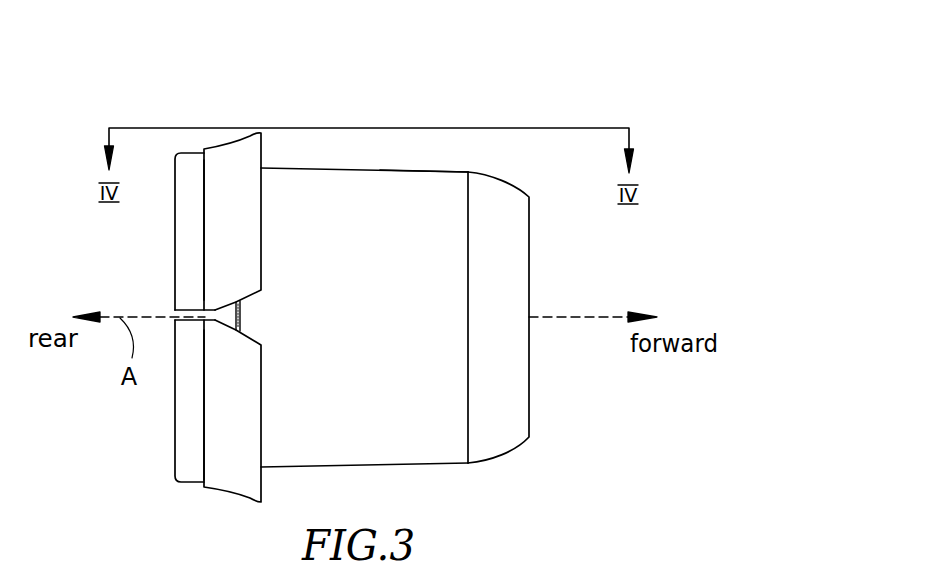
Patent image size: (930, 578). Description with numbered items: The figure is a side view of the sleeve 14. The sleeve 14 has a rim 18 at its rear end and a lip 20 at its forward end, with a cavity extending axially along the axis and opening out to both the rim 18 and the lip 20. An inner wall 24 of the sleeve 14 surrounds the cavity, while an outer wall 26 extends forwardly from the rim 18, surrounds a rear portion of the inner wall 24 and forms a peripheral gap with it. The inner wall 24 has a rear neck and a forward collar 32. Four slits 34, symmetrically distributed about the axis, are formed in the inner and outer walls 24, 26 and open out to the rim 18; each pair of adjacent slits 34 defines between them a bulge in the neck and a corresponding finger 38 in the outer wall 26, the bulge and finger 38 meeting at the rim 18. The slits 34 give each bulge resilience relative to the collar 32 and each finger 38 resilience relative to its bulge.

The sleeve 14 is at (557, 68).
The rim 18 is at (167, 134).
The lip 20 is at (529, 197).
The inner wall 24 is at (341, 191).
The outer wall 26 is at (230, 156).
The forward collar 32 is at (415, 203).
The slits 34 is at (151, 296).
The finger 38 is at (222, 228).